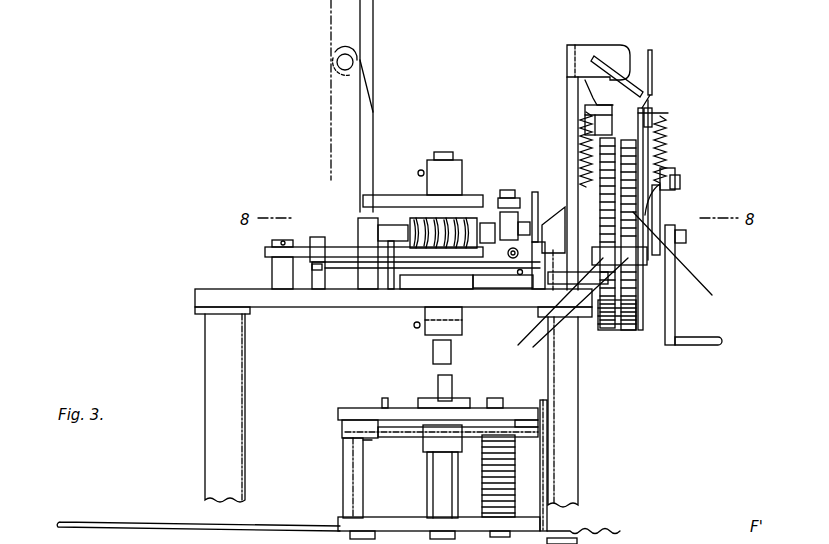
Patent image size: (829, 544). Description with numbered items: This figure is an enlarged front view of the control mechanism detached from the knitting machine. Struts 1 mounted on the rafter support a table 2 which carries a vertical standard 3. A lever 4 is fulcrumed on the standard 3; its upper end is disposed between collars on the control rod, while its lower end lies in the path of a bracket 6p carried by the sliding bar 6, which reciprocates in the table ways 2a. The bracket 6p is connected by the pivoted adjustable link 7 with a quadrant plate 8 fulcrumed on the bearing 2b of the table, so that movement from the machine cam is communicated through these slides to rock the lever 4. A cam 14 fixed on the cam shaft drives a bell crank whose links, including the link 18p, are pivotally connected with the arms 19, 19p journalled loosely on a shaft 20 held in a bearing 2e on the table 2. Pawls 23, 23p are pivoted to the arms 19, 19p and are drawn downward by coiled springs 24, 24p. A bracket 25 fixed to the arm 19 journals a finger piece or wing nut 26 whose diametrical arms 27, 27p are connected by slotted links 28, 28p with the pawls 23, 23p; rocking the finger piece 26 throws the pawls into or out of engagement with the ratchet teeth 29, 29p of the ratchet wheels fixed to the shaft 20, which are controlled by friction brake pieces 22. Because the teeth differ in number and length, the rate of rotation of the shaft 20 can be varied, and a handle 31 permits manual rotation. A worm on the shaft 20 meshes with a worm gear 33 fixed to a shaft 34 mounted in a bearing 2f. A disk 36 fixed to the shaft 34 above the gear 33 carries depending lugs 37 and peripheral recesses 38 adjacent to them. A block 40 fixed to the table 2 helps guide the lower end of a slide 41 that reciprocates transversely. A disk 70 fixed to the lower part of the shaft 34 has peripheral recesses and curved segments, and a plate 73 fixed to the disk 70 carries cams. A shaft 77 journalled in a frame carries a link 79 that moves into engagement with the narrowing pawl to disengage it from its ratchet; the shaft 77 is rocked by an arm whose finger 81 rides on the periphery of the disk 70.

The struts 1 is at (240, 406).
The table 2 is at (243, 295).
The table ways 2a is at (285, 270).
The bearing 2b is at (628, 334).
The bearing 2e is at (382, 216).
The bearing 2f is at (438, 346).
The vertical standard 3 is at (373, 122).
The lever 4 is at (361, 30).
The sliding bar 6 is at (300, 248).
The bracket 6p is at (318, 238).
The pivoted adjustable link 7 is at (408, 302).
The quadrant plate 8 is at (602, 322).
The cam 14 is at (612, 540).
The link 18p is at (675, 178).
The arm 19 is at (570, 176).
The arm 19p is at (670, 206).
The shaft 20 is at (405, 210).
The friction brake pieces 22 is at (571, 308).
The pawl 23 is at (583, 150).
The pawl 23p is at (645, 112).
The coiled spring 24 is at (594, 130).
The coiled spring 24p is at (668, 136).
The bracket 25 is at (572, 45).
The finger piece or wing nut 26 is at (642, 58).
The diametrical arm 27 is at (605, 45).
The diametrical arm 27p is at (656, 104).
The slotted link 28 is at (572, 94).
The slotted link 28p is at (652, 62).
The ratchet teeth 29 is at (620, 232).
The ratchet teeth 29p is at (684, 259).
The handle 31 is at (722, 348).
The worm gear 33 is at (470, 216).
The shaft 34 is at (456, 158).
The disk 36 is at (442, 150).
The cams or lugs 37 is at (365, 216).
The peripheral slots or recesses 38 is at (465, 196).
The block 40 is at (490, 302).
The slide 41 is at (506, 258).
The disk 70 is at (430, 438).
The plate 73 is at (398, 405).
The shaft 77 is at (343, 495).
The link 79 is at (262, 528).
The finger 81 is at (363, 432).